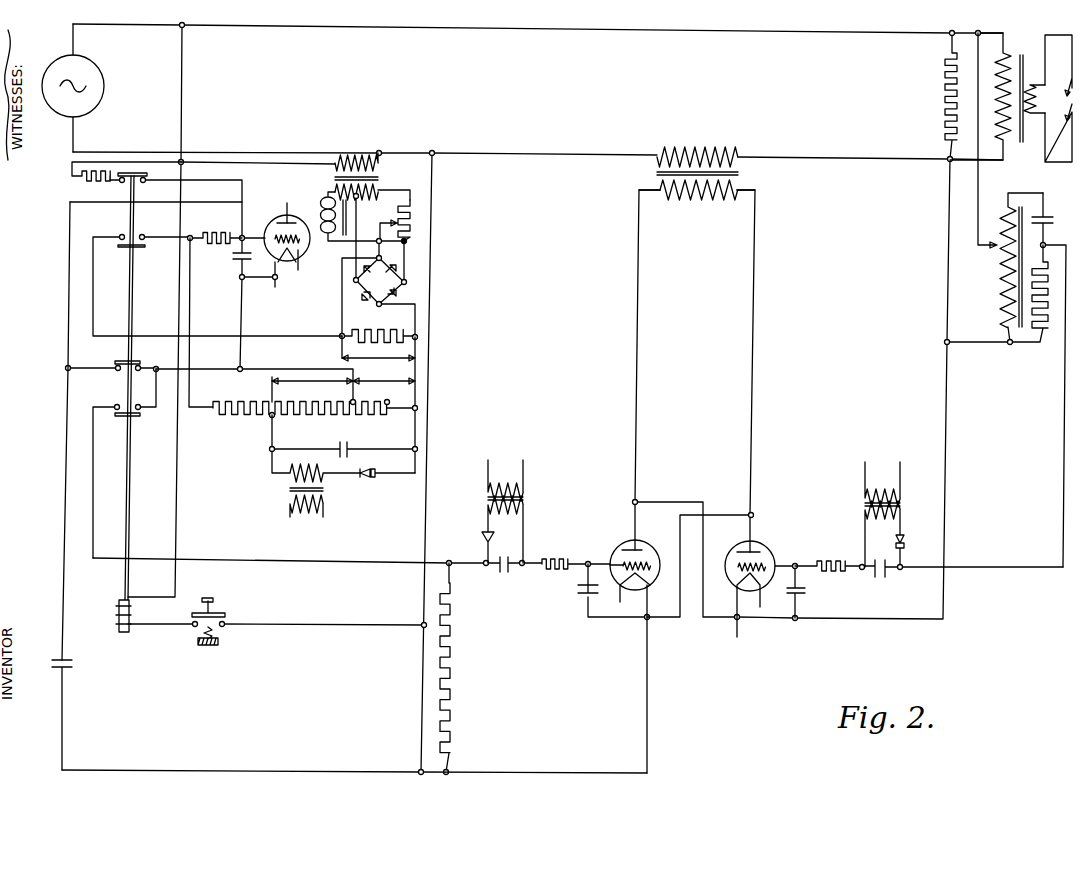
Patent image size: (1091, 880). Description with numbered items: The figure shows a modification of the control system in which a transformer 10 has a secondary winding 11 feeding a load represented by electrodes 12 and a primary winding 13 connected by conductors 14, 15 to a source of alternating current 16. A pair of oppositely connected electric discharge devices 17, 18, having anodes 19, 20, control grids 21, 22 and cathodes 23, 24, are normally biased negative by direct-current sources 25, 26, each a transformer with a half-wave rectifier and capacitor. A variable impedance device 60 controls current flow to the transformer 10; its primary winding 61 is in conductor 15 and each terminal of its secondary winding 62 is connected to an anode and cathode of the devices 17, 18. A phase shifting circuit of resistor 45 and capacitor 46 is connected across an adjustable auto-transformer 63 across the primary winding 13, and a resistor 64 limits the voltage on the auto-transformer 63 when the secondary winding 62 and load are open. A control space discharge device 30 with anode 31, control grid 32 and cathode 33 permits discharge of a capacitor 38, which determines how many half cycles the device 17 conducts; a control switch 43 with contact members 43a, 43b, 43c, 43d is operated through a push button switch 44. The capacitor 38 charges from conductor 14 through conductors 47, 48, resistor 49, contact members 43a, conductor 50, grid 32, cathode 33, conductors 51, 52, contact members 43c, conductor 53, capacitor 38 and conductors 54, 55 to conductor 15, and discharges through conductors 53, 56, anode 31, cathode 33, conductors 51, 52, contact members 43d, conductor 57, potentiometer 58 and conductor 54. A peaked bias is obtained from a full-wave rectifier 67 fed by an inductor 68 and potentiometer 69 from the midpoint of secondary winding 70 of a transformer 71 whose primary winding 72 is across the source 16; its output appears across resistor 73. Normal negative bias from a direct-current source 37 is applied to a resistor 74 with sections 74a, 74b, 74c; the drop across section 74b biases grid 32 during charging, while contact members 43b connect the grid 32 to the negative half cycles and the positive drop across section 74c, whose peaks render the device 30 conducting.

The transformer 10 is at (1018, 76).
The secondary winding 11 is at (1040, 96).
The electrodes 12 is at (1071, 98).
The primary winding 13 is at (1000, 70).
The conductor 14 is at (690, 36).
The conductor 15 is at (600, 157).
The source of alternating current 16 is at (87, 88).
The electric discharge device 17 is at (657, 481).
The electric discharge device 18 is at (798, 398).
The anode 19 is at (643, 550).
The anode 20 is at (768, 552).
The control grid 21 is at (652, 565).
The control grid 22 is at (773, 567).
The cathode 23 is at (652, 584).
The cathode 24 is at (758, 590).
The direct-current source 25 is at (515, 493).
The direct-current source 26 is at (929, 507).
The control space discharge device 30 is at (288, 240).
The anode 31 is at (272, 225).
The control grid 32 is at (304, 246).
The cathode 33 is at (300, 262).
The direct-current source 37 is at (344, 488).
The capacitor 38 is at (72, 663).
The control switch 43 is at (133, 404).
The contact members 43a is at (142, 187).
The contact members 43b is at (134, 235).
The contact members 43c is at (116, 358).
The contact members 43d is at (119, 404).
The push button switch 44 is at (221, 613).
The resistor 45 is at (1042, 345).
The capacitor 46 is at (1048, 220).
The conductor 47 is at (182, 106).
The conductor 48 is at (76, 153).
The resistor 49 is at (78, 186).
The conductor 50 is at (243, 192).
The conductor 51 is at (244, 312).
The conductor 52 is at (210, 361).
The conductor 53 is at (65, 602).
The conductor 54 is at (302, 770).
The conductor 55 is at (431, 416).
The conductor 56 is at (272, 204).
The conductor 57 is at (378, 560).
The potentiometer 58 is at (456, 644).
The variable impedance device 60 is at (712, 178).
The primary winding 61 is at (695, 160).
The secondary winding 62 is at (714, 194).
The adjustable auto-transformer 63 is at (1000, 284).
The resistor 64 is at (945, 92).
The full-wave rectifier 67 is at (382, 288).
The inductor 68 is at (326, 216).
The potentiometer 69 is at (392, 215).
The secondary winding 70 is at (378, 190).
The transformer 71 is at (295, 166).
The primary winding 72 is at (350, 165).
The resistor 73 is at (368, 336).
The resistor 74 is at (303, 355).
The section 74a is at (228, 401).
The section 74b is at (310, 404).
The section 74c is at (382, 405).